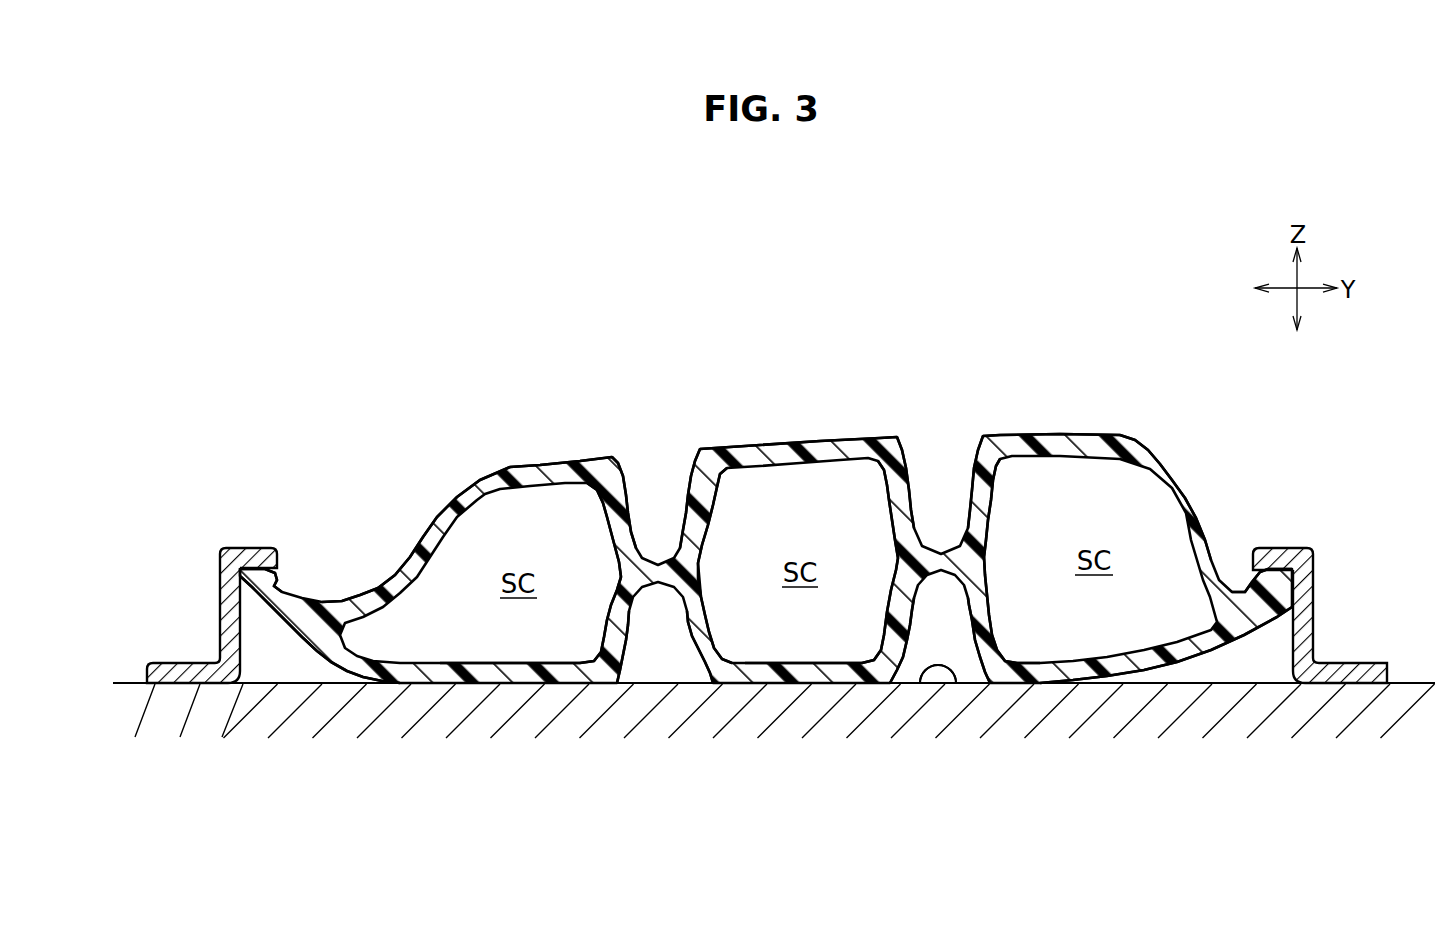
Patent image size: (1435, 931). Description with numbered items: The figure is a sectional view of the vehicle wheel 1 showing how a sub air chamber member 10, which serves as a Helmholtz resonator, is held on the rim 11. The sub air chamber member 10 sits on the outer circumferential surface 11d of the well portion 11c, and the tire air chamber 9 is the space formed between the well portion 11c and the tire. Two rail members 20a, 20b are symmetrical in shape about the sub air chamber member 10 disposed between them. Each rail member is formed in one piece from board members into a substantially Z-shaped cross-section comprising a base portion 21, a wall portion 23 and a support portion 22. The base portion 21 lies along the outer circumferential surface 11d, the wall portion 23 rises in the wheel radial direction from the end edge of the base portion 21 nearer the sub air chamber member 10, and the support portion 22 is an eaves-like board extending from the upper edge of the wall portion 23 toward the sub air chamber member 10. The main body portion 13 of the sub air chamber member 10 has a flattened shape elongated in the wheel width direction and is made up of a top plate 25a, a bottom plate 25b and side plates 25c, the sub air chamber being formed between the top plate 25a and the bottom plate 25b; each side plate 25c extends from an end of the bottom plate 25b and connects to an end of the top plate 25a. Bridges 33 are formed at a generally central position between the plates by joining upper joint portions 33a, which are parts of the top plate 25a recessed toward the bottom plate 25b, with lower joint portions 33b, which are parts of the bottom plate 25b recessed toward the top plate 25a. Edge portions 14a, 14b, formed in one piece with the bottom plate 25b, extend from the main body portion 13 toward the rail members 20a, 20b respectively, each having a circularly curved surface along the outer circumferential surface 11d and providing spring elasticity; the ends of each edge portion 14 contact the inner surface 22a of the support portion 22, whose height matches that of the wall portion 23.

The vehicle wheel 1 is at (511, 386).
The tire air chamber 9 is at (801, 308).
The sub air chamber member 10 is at (1066, 412).
The rim 11 is at (118, 750).
The well portion 11c is at (953, 683).
The outer circumferential surface 11d is at (953, 683).
The main body portion 13 is at (1066, 412).
The edge portion 14 is at (787, 681).
The edge portion 14a is at (1284, 610).
The edge portion 14b is at (267, 600).
The rail member 20a is at (1273, 464).
The rail member 20b is at (103, 464).
The base portion 21 is at (190, 663).
The support portion 22 is at (257, 548).
The inner surface 22a is at (277, 570).
The wall portion 23 is at (220, 607).
The top plate 25a is at (810, 452).
The bottom plate 25b is at (557, 672).
The side plate 25c is at (415, 535).
The bridge 33 is at (582, 388).
The upper joint portion 33a is at (603, 530).
The lower joint portion 33b is at (707, 627).